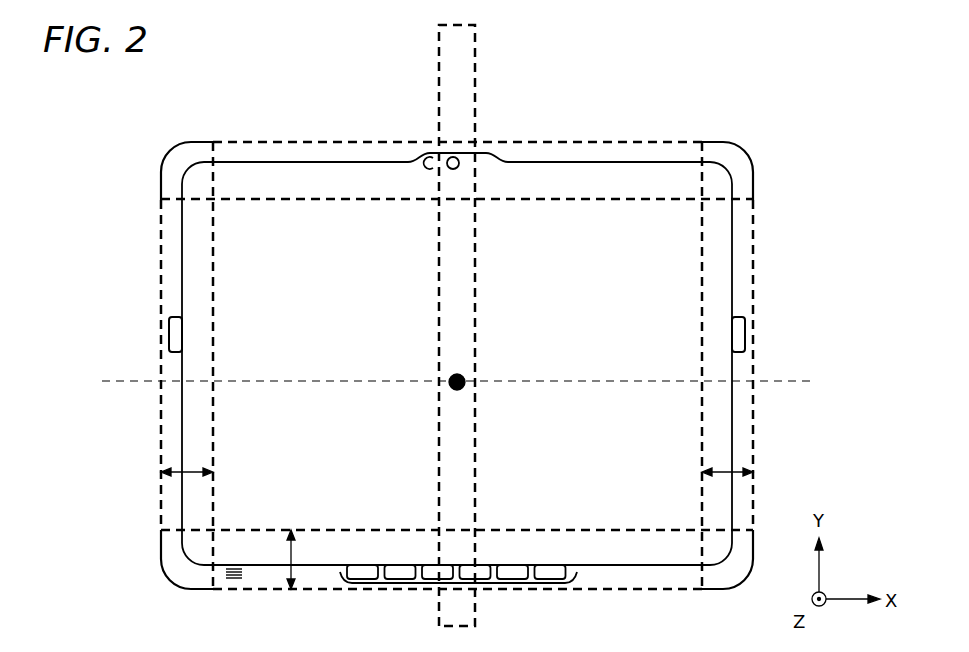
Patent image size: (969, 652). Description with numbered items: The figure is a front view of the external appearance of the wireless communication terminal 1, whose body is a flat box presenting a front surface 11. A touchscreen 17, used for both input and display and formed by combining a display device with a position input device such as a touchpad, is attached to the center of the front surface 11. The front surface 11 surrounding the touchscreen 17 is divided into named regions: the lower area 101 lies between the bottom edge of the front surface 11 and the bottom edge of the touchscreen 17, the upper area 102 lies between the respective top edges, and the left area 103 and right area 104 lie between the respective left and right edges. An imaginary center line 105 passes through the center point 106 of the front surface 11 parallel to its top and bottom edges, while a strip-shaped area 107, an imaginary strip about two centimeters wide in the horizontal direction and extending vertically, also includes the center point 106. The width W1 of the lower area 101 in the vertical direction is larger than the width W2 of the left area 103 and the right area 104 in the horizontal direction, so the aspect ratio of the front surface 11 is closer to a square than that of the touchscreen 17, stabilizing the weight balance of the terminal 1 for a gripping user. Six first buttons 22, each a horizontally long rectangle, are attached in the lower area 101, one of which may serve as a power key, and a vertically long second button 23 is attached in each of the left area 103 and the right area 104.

The wireless communication terminal 1 is at (316, 83).
The front surface 11 is at (737, 158).
The touchscreen 17 is at (657, 242).
The first button 22 is at (497, 586).
The second button 23 is at (172, 335).
The lower area 101 is at (600, 592).
The upper area 102 is at (634, 140).
The left area 103 is at (160, 425).
The right area 104 is at (755, 400).
The center line 105 is at (140, 380).
The center point 106 is at (457, 392).
The strip-shaped area 107 is at (438, 607).
The width of the lower area W1 is at (291, 560).
The width of the left area and right area W2 is at (190, 477).